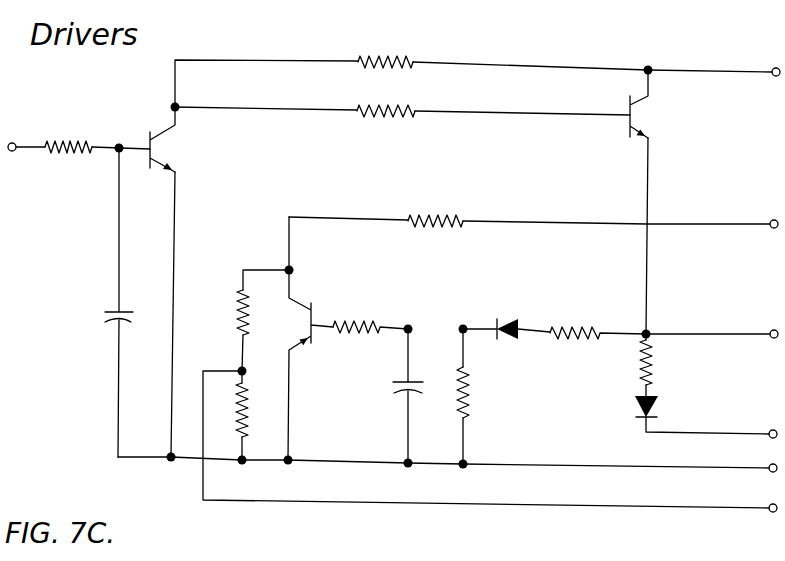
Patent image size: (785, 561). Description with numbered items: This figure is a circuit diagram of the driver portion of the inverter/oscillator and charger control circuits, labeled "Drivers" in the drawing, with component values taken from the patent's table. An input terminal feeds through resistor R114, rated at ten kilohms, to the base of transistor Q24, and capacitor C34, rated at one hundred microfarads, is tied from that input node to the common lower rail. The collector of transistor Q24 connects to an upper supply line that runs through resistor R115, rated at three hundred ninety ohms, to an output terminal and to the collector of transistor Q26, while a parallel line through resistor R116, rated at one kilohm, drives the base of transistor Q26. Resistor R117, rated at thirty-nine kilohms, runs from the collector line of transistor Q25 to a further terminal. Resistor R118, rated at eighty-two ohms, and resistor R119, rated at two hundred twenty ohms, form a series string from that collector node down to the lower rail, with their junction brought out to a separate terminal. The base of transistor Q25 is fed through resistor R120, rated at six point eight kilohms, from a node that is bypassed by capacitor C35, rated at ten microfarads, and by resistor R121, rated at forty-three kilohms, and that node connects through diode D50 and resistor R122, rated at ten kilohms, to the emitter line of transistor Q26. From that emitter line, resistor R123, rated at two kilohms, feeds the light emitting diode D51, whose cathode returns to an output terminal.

The resistor R114 is at (67, 140).
The transistor Q24 is at (165, 150).
The resistor R115 is at (386, 56).
The resistor R116 is at (400, 116).
The resistor R117 is at (452, 212).
The transistor Q26 is at (637, 115).
The capacitor C34 is at (104, 316).
The resistor R118 is at (239, 297).
The transistor Q25 is at (320, 302).
The resistor R120 is at (368, 319).
The diode D50 is at (500, 320).
The resistor R122 is at (580, 325).
The capacitor C35 is at (392, 387).
The resistor R119 is at (250, 423).
The resistor R121 is at (468, 406).
The resistor R123 is at (650, 357).
The light emitting diode D51 is at (658, 405).